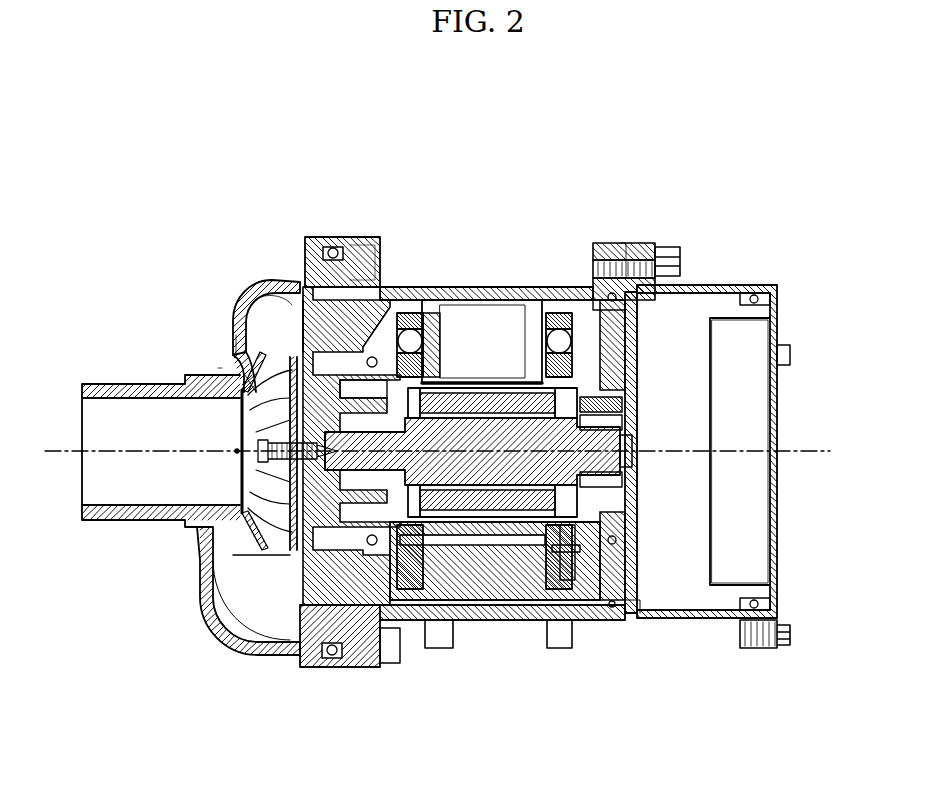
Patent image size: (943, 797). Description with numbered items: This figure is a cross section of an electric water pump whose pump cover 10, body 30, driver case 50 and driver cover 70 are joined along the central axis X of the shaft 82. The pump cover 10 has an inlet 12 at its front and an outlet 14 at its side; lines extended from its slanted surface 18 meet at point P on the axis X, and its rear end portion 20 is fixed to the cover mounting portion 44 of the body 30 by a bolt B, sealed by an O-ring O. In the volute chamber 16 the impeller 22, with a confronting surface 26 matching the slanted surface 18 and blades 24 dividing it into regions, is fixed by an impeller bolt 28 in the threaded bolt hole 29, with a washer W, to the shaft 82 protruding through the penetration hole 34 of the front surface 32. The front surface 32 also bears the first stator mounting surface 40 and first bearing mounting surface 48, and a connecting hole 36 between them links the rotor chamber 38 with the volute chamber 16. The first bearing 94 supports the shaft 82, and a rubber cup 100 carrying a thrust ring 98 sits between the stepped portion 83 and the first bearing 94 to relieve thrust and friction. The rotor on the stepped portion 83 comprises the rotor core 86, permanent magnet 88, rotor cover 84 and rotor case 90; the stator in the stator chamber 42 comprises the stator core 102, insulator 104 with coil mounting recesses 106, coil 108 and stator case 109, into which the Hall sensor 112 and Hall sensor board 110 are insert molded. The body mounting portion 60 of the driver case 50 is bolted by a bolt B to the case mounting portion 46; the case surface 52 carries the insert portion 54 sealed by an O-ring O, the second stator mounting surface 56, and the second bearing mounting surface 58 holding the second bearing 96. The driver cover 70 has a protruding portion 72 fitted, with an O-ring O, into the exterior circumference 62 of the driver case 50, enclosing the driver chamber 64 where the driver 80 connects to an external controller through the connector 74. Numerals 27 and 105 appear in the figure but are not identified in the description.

The pump cover 10 is at (180, 573).
The inlet 12 is at (105, 410).
The outlet 14 is at (245, 622).
The volute chamber 16 is at (236, 297).
The slanted surface 18 is at (243, 372).
The rear end portion 20 is at (323, 247).
The impeller 22 is at (238, 478).
The blades 24 is at (243, 490).
The confronting surface 26 is at (220, 368).
The volute passage 27 is at (268, 322).
The impeller bolt 28 is at (257, 442).
The bolt hole 29 is at (234, 357).
The body 30 is at (455, 225).
The front surface 32 is at (378, 362).
The penetration hole 34 is at (253, 573).
The connecting hole 36 is at (293, 307).
The rotor chamber 38 is at (318, 655).
The first stator mounting surface 40 is at (397, 310).
The stator chamber 42 is at (322, 313).
The cover mounting portion 44 is at (358, 263).
The case mounting portion 46 is at (605, 262).
The first bearing mounting surface 48 is at (425, 345).
The driver case 50 is at (690, 282).
The case surface 52 is at (635, 258).
The insert portion 54 is at (608, 292).
The second stator mounting surface 56 is at (627, 367).
The second bearing mounting surface 58 is at (617, 400).
The body mounting portion 60 is at (668, 262).
The exterior circumference 62 is at (732, 285).
The driver chamber 64 is at (675, 502).
The driver cover 70 is at (777, 440).
The protruding portion 72 is at (772, 298).
The connector 74 is at (790, 358).
The driver 80 is at (752, 533).
The shaft 82 is at (480, 600).
The stepped portion 83 is at (630, 425).
The rotor cover 84 is at (447, 580).
The rotor core 86 is at (475, 510).
The permanent magnet 88 is at (520, 515).
The rotor case 90 is at (490, 600).
The first bearing 94 is at (287, 603).
The second bearing 96 is at (640, 615).
The thrust ring 98 is at (325, 640).
The cup 100 is at (398, 645).
The stator core 102 is at (500, 307).
The insulator 104 is at (410, 333).
The flange seat 105 is at (600, 295).
The coil mounting recesses 106 is at (430, 312).
The coil 108 is at (557, 320).
The stator case 109 is at (622, 262).
The Hall sensor board 110 is at (560, 560).
The Hall sensor 112 is at (542, 600).
The bolt B is at (676, 255).
The O-ring O is at (335, 250).
The intersecting point P is at (230, 462).
The washer W is at (185, 543).
The central axis X is at (430, 452).